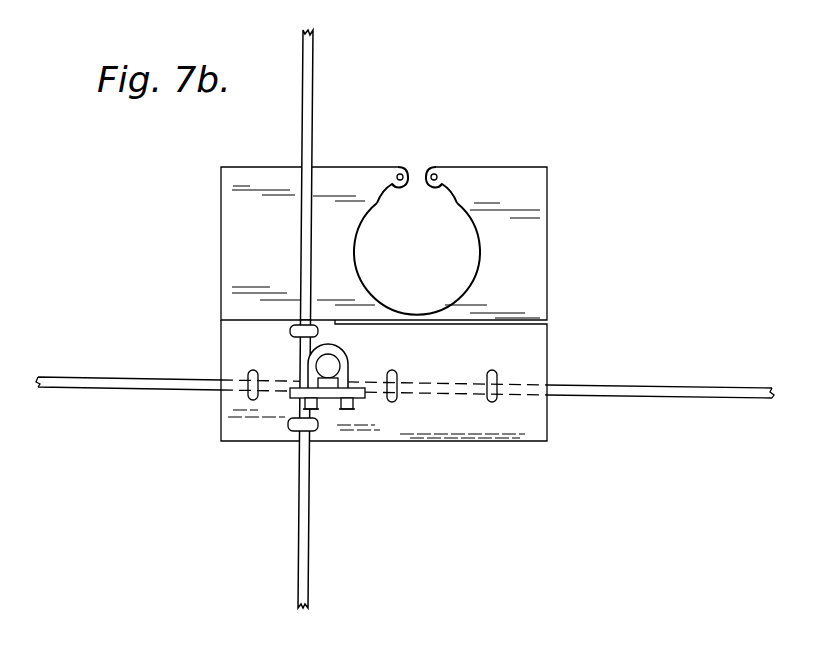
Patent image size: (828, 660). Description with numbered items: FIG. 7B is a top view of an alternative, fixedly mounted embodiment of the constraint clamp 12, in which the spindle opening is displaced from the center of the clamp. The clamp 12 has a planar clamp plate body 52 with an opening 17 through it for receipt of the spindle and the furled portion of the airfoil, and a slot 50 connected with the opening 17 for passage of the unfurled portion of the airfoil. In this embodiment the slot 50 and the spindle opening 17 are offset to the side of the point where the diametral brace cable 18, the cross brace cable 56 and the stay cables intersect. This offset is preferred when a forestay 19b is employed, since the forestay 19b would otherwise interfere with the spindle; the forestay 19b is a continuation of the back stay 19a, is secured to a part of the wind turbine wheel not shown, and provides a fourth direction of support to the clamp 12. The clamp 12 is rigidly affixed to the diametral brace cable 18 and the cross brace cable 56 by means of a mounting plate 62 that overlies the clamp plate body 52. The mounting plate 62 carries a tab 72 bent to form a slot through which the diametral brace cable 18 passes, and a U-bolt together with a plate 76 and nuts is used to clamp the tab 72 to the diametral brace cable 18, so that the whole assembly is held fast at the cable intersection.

The constraint clamp 12 is at (522, 160).
The opening 17 is at (477, 274).
The diametral brace cable 18 is at (348, 357).
The back stay 19a is at (308, 578).
The forestay 19b is at (313, 78).
The slot 50 is at (424, 167).
The clamp plate body 52 is at (539, 200).
The cross brace cable 56 is at (719, 389).
The mounting plate 62 is at (544, 361).
The tab 72 is at (332, 405).
The plate 76 is at (297, 396).